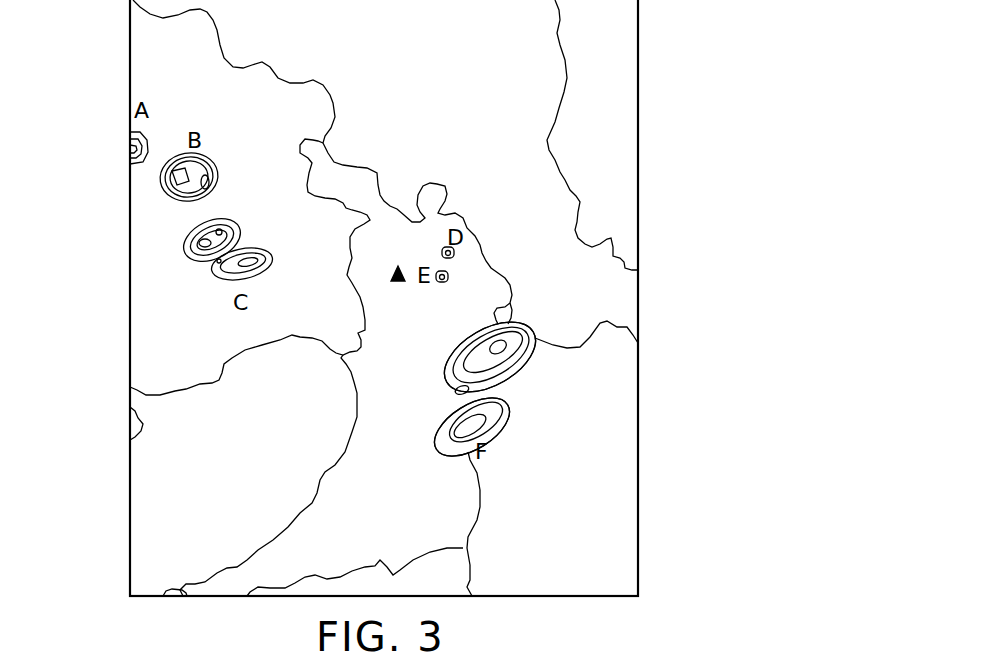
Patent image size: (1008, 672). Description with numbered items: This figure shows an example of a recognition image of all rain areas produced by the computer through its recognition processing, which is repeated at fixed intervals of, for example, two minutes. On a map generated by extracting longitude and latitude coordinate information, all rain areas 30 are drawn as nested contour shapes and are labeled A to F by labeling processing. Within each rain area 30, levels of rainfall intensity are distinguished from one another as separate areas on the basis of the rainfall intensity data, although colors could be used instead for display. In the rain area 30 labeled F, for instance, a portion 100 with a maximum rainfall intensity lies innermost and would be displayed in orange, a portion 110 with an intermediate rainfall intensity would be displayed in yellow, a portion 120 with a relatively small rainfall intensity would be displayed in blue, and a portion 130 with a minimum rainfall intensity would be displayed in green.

The rain area 30 is at (187, 230).
The portion with a maximum rainfall intensity 100 is at (510, 335).
The portion with an intermediate rainfall intensity 110 is at (518, 350).
The portion with a relatively small rainfall intensity 120 is at (447, 455).
The portion with a minimum rainfall intensity 130 is at (452, 348).